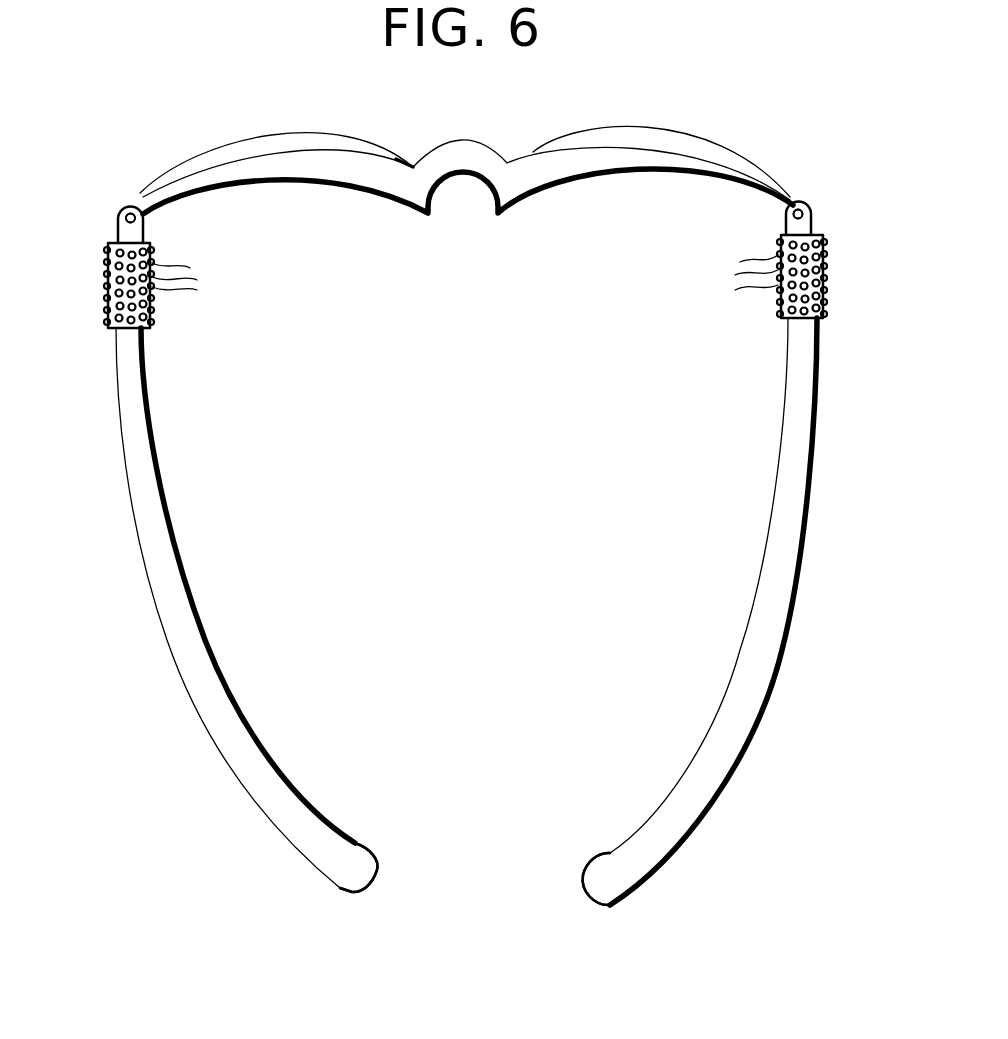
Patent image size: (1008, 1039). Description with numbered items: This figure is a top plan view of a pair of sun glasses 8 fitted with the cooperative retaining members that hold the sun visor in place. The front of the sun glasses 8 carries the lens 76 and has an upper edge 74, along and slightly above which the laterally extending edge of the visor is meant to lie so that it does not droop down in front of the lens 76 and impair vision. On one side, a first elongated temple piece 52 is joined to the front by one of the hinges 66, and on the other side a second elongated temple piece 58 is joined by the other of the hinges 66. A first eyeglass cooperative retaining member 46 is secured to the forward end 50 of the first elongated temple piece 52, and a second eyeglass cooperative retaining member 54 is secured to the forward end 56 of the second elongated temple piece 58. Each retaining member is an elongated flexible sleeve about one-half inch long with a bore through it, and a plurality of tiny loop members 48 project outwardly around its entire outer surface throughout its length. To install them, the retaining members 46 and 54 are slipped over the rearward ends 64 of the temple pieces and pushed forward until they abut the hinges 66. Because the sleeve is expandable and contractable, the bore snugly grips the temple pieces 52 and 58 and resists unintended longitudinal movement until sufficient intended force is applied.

The sun glasses 8 is at (412, 166).
The upper edge 74 is at (550, 175).
The lens 76 is at (255, 135).
The hinges 66 is at (128, 206).
The forward end 50 is at (118, 230).
The forward end 56 is at (818, 224).
The first eyeglass cooperative retaining member 46 is at (108, 280).
The second eyeglass cooperative retaining member 54 is at (826, 285).
The tiny loop members 48 is at (465, 271).
The first elongated temple piece 52 is at (140, 542).
The second elongated temple piece 58 is at (783, 657).
The rearward ends 64 is at (368, 888).